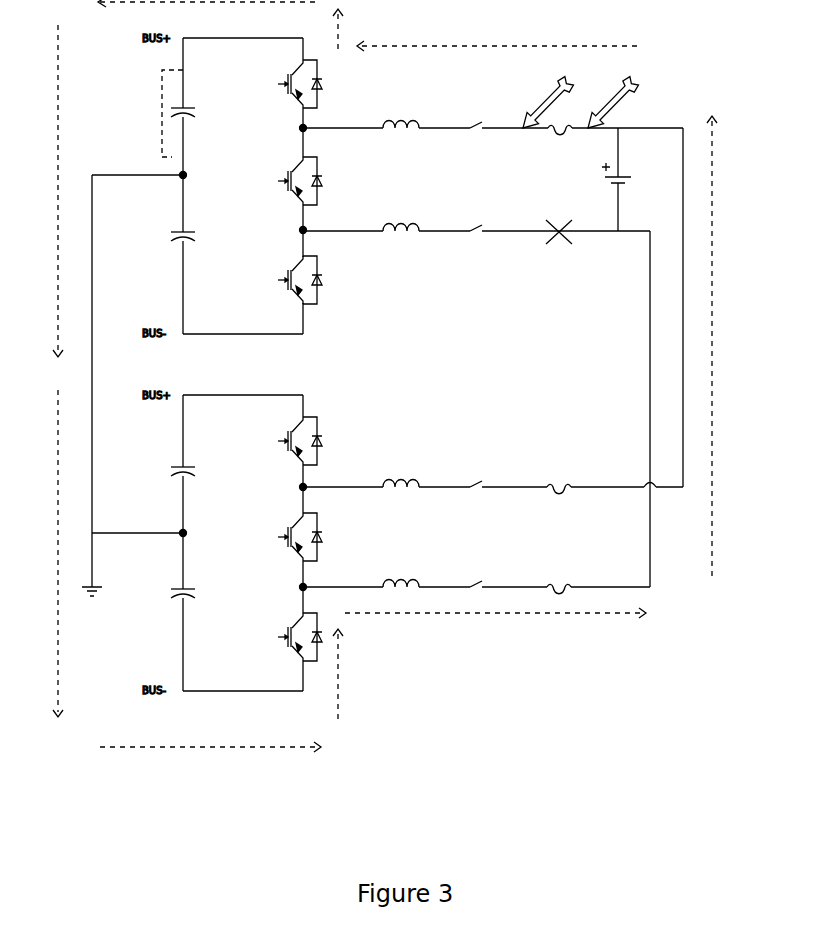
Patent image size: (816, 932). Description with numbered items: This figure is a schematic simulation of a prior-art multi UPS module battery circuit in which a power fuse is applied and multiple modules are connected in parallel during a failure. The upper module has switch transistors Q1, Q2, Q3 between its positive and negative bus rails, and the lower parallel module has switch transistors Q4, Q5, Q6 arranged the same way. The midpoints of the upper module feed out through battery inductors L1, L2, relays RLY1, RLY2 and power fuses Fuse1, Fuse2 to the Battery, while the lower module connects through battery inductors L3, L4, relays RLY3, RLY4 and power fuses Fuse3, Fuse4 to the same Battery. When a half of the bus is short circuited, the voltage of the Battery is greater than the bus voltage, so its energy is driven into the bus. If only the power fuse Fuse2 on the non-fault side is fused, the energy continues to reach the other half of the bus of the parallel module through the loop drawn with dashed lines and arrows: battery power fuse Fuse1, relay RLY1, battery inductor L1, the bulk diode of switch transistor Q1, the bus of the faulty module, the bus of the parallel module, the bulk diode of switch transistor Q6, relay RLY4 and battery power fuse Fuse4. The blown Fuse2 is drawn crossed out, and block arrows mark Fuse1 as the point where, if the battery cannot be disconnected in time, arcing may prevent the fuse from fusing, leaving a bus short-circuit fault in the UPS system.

The switch transistor Q1 is at (283, 84).
The IGBT switch Q2 is at (283, 181).
The switch transistor Q3 is at (283, 280).
The IGBT switch Q4 is at (283, 441).
The IGBT switch Q5 is at (283, 537).
The switch transistor Q6 is at (283, 637).
The battery inductor L1 is at (401, 120).
The battery inductor L2 is at (401, 223).
The inductor L3 is at (401, 479).
The inductor L4 is at (401, 579).
The relay RLY1 is at (474, 120).
The relay RLY2 is at (474, 223).
The relay RLY3 is at (474, 479).
The relay RLY4 is at (474, 579).
The power fuse Fuse1 is at (560, 124).
The power fuse Fuse2 is at (557, 228).
The fuse Fuse3 is at (559, 482).
The battery power fuse Fuse4 is at (559, 582).
The battery Battery is at (590, 179).